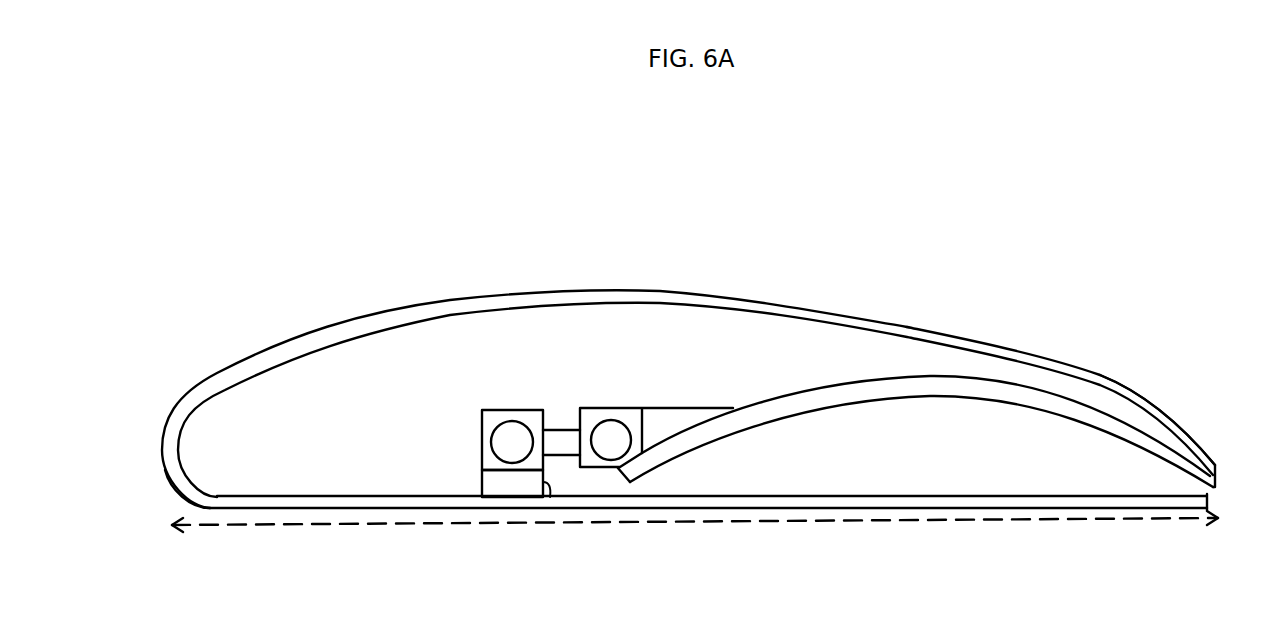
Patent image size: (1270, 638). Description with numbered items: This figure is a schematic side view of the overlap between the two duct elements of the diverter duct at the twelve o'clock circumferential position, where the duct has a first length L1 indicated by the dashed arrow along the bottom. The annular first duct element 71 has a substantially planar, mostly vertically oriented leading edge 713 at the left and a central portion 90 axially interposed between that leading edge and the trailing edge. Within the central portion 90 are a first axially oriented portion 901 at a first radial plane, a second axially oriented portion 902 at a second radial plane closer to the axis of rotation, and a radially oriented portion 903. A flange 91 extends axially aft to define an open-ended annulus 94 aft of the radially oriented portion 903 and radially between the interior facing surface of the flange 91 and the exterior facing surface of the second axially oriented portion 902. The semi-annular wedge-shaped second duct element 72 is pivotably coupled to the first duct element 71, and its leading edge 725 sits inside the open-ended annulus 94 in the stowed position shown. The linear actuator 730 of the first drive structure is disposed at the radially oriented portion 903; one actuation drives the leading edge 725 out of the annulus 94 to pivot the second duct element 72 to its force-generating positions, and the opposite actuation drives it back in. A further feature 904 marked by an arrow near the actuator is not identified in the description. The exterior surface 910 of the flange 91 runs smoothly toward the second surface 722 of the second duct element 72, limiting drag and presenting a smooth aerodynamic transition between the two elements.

The central portion 90 is at (592, 286).
The flange 91 is at (910, 330).
The first axially oriented portion 901 is at (427, 323).
The exterior surface 910 is at (1127, 395).
The second surface 722 is at (988, 378).
The second duct element 72 is at (988, 405).
The open-ended annulus 94 is at (887, 451).
The leading edge 725 is at (658, 407).
The linear actuator 730 is at (482, 470).
The radially oriented portion 903 is at (549, 498).
The pivot point 904 is at (567, 472).
The first duct element 71 is at (420, 510).
The second axially oriented portion 902 is at (870, 508).
The leading edge 713 is at (180, 493).
The first length L1 is at (265, 530).